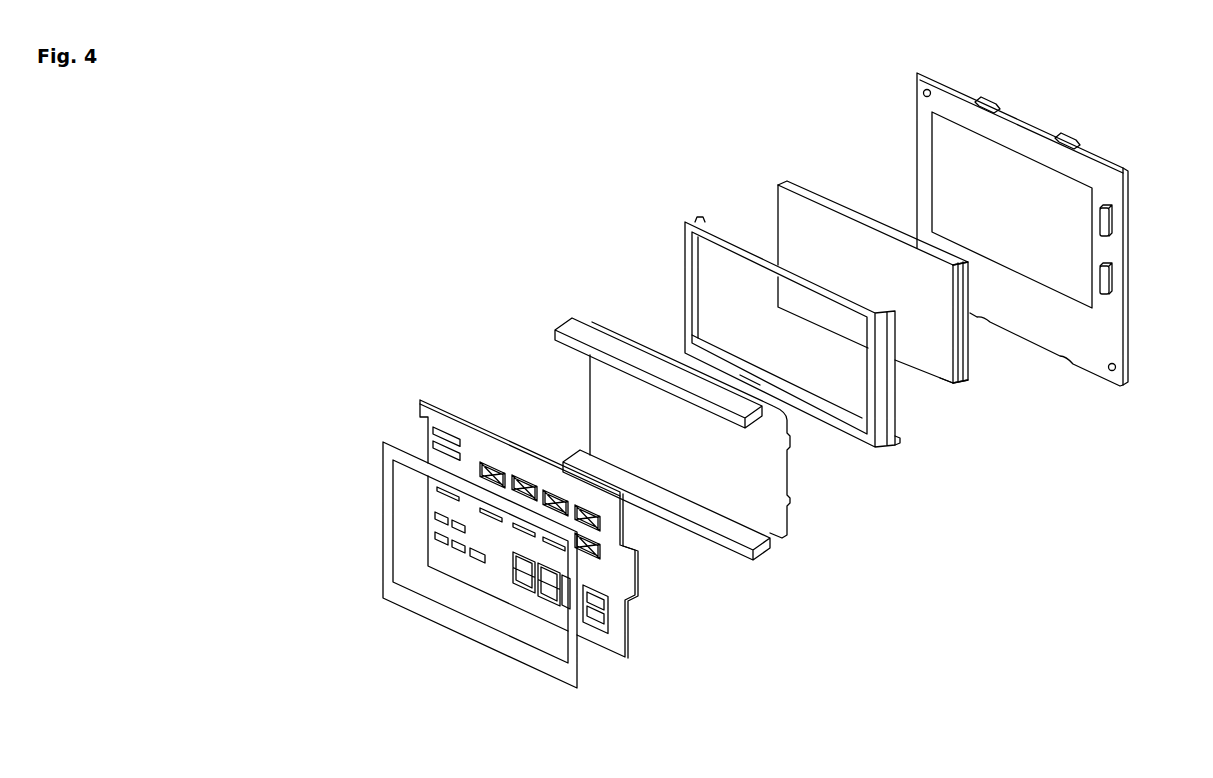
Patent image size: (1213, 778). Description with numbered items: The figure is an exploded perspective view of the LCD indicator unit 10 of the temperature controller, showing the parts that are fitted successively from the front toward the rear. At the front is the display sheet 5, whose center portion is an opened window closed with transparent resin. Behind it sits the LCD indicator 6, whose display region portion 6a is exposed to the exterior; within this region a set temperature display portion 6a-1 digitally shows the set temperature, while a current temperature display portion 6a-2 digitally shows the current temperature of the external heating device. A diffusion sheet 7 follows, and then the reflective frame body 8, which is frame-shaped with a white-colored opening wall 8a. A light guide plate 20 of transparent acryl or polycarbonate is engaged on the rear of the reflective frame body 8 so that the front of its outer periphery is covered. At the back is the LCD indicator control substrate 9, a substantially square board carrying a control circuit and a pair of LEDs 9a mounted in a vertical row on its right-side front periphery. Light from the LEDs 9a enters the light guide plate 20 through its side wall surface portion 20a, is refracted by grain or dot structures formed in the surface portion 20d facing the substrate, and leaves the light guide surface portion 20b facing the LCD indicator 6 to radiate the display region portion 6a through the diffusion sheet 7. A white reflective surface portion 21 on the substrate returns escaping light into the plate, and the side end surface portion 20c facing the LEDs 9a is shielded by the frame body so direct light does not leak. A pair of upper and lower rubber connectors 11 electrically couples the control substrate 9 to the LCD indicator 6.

The display sheet 5 is at (388, 457).
The LCD indicator 6 is at (518, 520).
The display region portion 6a is at (430, 430).
The set temperature display portion 6a-1 is at (615, 637).
The current temperature display portion 6a-2 is at (516, 459).
The diffusion sheet 7 is at (786, 520).
The reflective frame body 8 is at (748, 358).
The opening wall 8a is at (848, 408).
The LCD indicator control substrate 9 is at (1050, 277).
The LEDs 9a is at (1113, 220).
The LCD indicator unit 10 is at (1182, 112).
The rubber connectors 11 is at (567, 328).
The light guide plate 20 is at (879, 307).
The side wall surface portion 20a is at (970, 368).
The light guide surface portion 20b is at (792, 218).
The side end surface portion 20c is at (944, 391).
The surface portion 20d is at (815, 188).
The white reflective surface portion 21 is at (1073, 203).